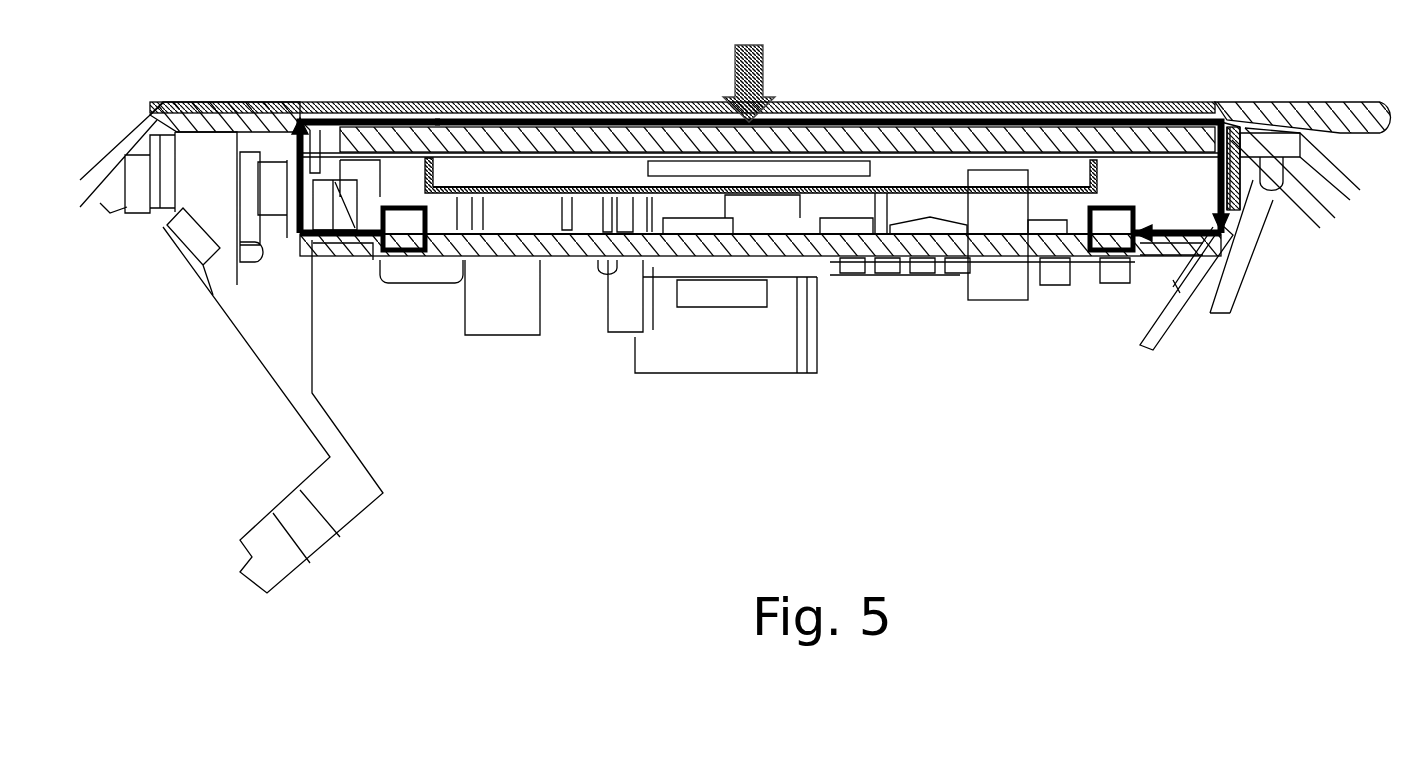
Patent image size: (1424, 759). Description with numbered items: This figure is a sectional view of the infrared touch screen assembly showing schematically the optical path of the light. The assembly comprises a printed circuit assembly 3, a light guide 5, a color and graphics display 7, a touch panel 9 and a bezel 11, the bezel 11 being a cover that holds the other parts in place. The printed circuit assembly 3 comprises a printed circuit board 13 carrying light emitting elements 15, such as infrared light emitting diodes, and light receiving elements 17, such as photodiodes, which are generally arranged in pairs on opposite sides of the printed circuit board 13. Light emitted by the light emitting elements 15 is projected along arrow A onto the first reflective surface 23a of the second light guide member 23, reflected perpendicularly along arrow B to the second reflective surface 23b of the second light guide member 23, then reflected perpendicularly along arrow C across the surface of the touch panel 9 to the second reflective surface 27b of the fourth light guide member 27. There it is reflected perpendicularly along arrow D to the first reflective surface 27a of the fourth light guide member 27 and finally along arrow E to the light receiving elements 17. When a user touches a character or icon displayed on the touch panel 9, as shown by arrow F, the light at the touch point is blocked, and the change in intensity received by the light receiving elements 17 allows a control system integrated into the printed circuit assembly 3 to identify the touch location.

The printed circuit assembly 3 is at (582, 270).
The light guide 5 is at (1235, 170).
The color and graphics display 7 is at (905, 170).
The touch panel 9 is at (1090, 146).
The bezel 11 is at (1332, 115).
The printed circuit board 13 is at (912, 250).
The light emitting elements 15 is at (400, 258).
The light receiving elements 17 is at (1118, 222).
The second light guide member 23 is at (293, 153).
The first reflective surface of the second light guide member 23a is at (297, 228).
The second reflective surface of the second light guide member 23b is at (300, 120).
The fourth light guide member 27 is at (1232, 190).
The first reflective surface of the fourth light guide member 27a is at (1232, 233).
The second reflective surface of the fourth light guide member 27b is at (1222, 122).
The arrow A is at (350, 235).
The arrow B is at (297, 145).
The arrow C is at (435, 120).
The arrow D is at (1227, 210).
The arrow E is at (1155, 235).
The arrow F is at (756, 82).